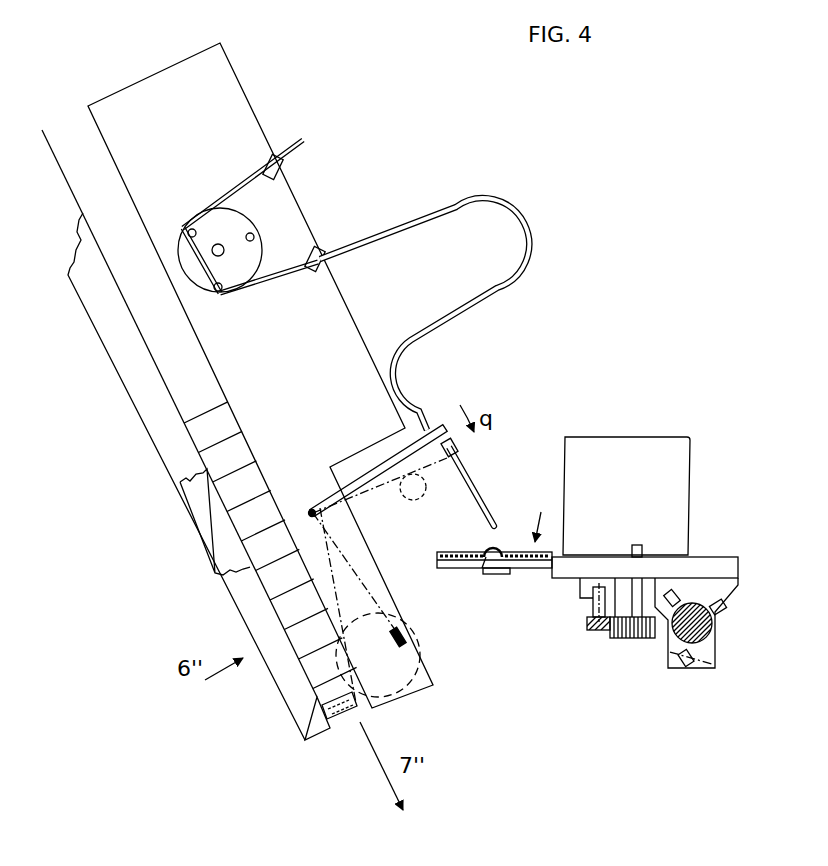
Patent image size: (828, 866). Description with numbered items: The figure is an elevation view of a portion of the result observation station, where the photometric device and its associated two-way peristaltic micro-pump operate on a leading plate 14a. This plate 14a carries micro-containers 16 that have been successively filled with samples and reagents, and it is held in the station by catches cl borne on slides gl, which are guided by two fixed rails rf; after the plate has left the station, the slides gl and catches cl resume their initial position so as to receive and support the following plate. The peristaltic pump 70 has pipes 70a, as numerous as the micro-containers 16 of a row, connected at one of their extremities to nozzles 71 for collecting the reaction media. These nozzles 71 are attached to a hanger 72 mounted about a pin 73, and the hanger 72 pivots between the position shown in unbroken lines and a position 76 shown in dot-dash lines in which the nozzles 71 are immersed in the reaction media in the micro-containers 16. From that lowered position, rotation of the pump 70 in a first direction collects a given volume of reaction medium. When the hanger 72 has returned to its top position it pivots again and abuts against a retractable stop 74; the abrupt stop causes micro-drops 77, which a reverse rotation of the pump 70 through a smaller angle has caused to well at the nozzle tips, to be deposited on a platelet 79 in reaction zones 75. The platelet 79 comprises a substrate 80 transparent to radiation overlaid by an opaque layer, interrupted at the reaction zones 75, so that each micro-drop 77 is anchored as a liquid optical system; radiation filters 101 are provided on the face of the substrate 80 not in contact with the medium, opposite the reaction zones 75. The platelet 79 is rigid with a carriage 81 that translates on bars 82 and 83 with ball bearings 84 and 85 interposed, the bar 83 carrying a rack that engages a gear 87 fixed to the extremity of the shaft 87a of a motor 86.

The leading plate 14a is at (168, 355).
The fixed rails rf is at (160, 432).
The slides gl is at (252, 590).
The catches cl is at (322, 738).
The micro-containers 16 is at (346, 720).
The peristaltic pump 70 is at (256, 241).
The pipes 70a is at (477, 204).
The nozzles 71 is at (481, 494).
The hanger 72 is at (445, 425).
The pin 73 is at (311, 509).
The retractable stop 74 is at (410, 497).
The reaction zones 75 is at (487, 567).
The position of the hanger 76 is at (363, 581).
The micro-drops 77 is at (507, 545).
The platelet 79 is at (537, 513).
The substrate 80 is at (626, 602).
The carriage 81 is at (722, 566).
The bar 82 is at (712, 628).
The bar 83 is at (596, 634).
The ball bearing 84 is at (590, 608).
The ball bearing 85 is at (690, 668).
The motor 86 is at (665, 450).
The gear 87 is at (632, 640).
The shaft 87a is at (632, 550).
The radiation filters 101 is at (511, 573).